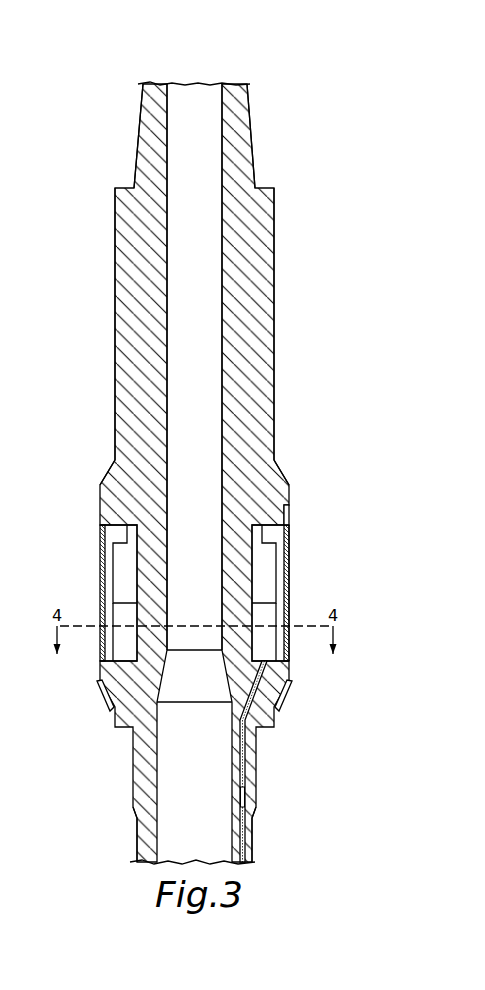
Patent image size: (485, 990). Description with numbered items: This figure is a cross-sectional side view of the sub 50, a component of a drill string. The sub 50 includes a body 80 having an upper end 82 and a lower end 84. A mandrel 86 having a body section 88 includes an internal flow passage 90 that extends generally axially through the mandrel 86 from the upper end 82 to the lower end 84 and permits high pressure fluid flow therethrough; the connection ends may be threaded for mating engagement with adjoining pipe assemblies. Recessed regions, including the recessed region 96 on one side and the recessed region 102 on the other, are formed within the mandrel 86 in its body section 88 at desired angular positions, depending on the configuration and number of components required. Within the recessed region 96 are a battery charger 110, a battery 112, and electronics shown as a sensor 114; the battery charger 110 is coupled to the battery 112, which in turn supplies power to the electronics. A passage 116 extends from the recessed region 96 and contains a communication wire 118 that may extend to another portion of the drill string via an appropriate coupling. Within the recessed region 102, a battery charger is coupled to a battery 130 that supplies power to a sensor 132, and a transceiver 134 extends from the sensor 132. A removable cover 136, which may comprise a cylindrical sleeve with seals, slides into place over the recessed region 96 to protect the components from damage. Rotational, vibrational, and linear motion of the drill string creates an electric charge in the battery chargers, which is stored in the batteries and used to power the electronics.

The sub 50 is at (195, 447).
The body 80 is at (114, 240).
The upper end 82 is at (147, 115).
The lower end 84 is at (143, 845).
The mandrel 86 is at (275, 240).
The body section 88 is at (279, 470).
The internal flow passage 90 is at (168, 102).
The recessed region 96 is at (268, 515).
The recessed region 102 is at (98, 538).
The battery charger 110 is at (279, 531).
The battery 112 is at (270, 582).
The sensor 114 is at (270, 648).
The passage 116 is at (244, 765).
The communication wire 118 is at (245, 785).
The battery 130 is at (123, 567).
The sensor 132 is at (118, 652).
The transceiver 134 is at (102, 697).
The removable cover 136 is at (290, 562).